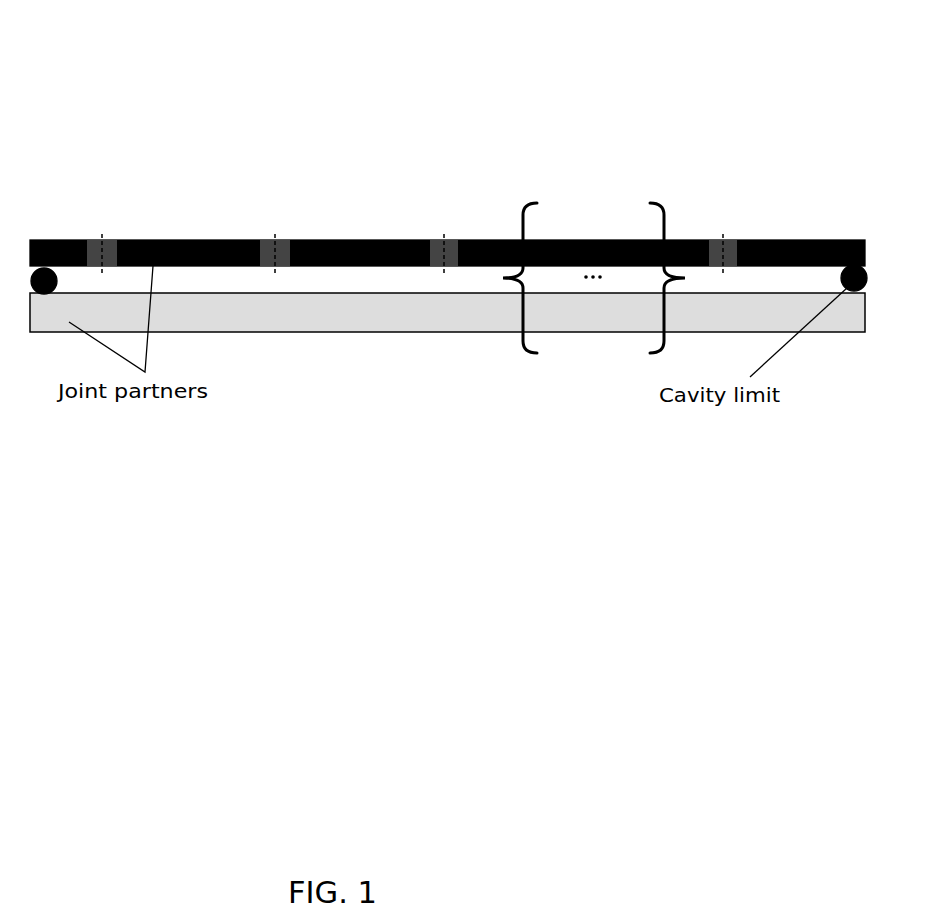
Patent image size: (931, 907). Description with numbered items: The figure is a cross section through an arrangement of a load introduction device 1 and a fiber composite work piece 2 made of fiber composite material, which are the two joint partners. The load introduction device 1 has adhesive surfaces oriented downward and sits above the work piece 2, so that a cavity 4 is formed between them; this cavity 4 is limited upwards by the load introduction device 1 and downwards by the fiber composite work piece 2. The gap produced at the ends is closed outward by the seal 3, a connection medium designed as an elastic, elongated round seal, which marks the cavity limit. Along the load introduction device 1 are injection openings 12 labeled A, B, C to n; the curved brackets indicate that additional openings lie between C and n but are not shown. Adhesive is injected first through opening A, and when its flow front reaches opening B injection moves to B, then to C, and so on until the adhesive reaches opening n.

The load introduction device 1 is at (447, 149).
The fiber composite work piece 2 is at (447, 426).
The seal 3 is at (448, 418).
The cavity 4 is at (425, 408).
The injection opening 12 is at (449, 189).